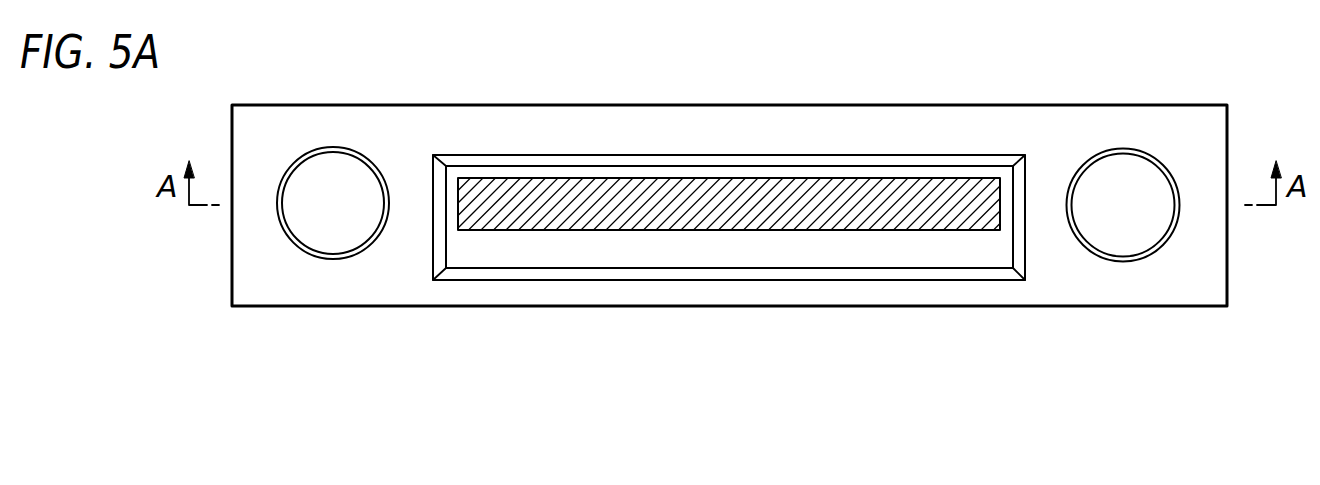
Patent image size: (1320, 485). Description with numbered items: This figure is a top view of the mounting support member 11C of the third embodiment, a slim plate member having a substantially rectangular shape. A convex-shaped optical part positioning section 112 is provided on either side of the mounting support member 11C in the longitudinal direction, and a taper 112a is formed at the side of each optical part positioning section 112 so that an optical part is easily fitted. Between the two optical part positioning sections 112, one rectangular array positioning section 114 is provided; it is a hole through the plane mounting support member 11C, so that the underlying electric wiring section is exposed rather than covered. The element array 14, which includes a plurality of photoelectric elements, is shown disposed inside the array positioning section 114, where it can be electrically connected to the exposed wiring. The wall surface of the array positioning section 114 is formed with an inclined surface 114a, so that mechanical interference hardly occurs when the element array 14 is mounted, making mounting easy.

The mounting support member 11C is at (1079, 283).
The optical part positioning section 112 is at (333, 204).
The taper 112a is at (315, 257).
The array positioning section 114 is at (843, 268).
The inclined surface 114a is at (802, 272).
The element array 14 is at (533, 205).